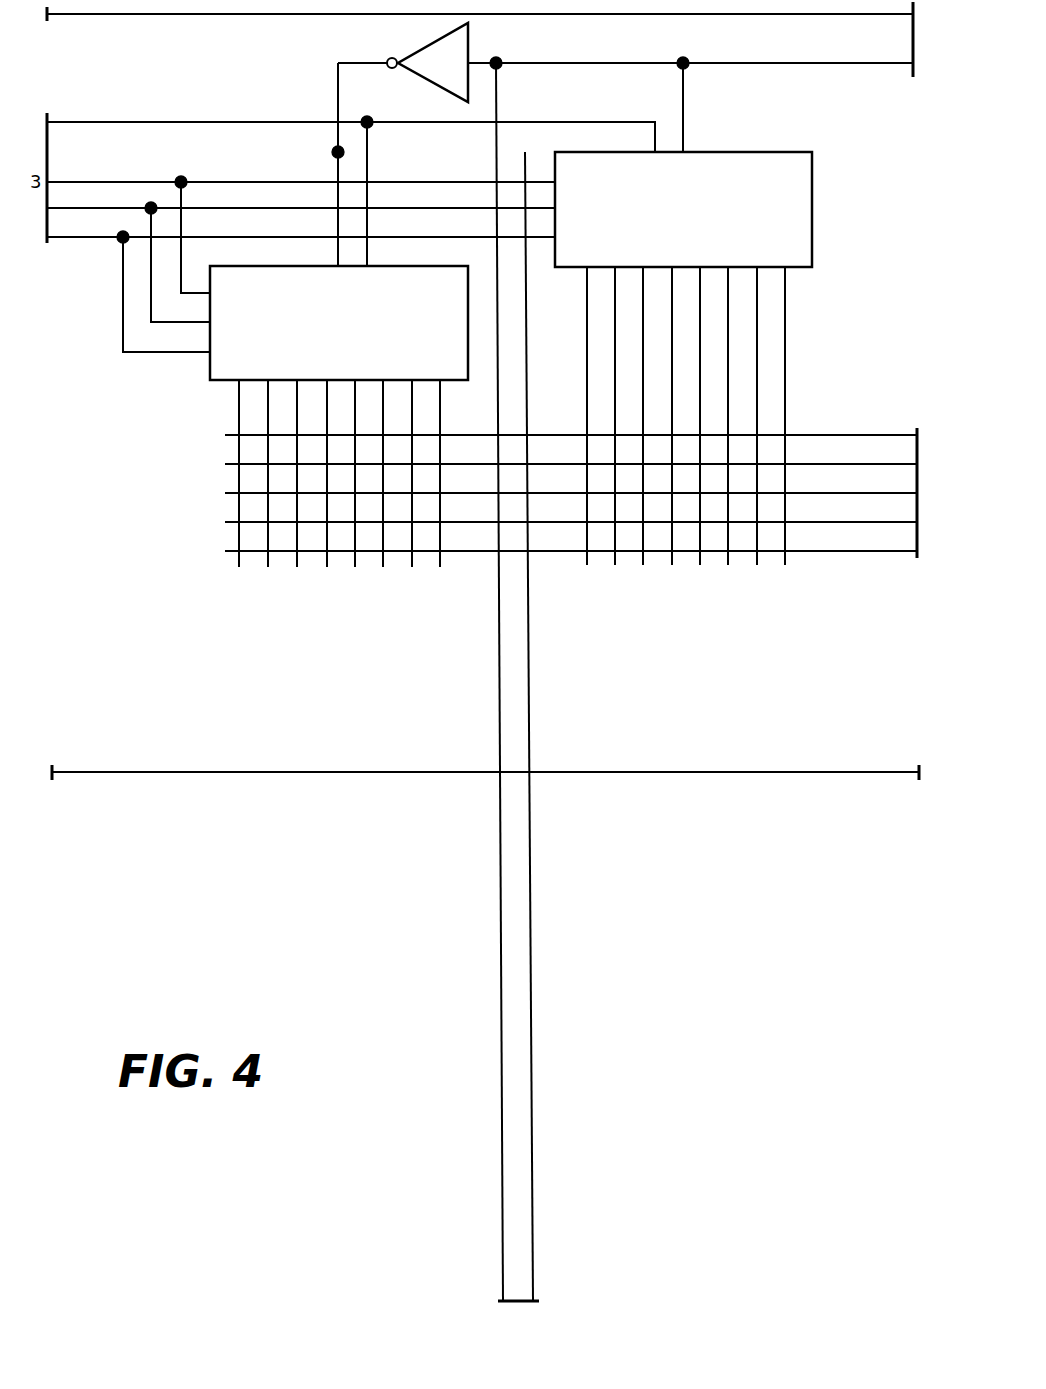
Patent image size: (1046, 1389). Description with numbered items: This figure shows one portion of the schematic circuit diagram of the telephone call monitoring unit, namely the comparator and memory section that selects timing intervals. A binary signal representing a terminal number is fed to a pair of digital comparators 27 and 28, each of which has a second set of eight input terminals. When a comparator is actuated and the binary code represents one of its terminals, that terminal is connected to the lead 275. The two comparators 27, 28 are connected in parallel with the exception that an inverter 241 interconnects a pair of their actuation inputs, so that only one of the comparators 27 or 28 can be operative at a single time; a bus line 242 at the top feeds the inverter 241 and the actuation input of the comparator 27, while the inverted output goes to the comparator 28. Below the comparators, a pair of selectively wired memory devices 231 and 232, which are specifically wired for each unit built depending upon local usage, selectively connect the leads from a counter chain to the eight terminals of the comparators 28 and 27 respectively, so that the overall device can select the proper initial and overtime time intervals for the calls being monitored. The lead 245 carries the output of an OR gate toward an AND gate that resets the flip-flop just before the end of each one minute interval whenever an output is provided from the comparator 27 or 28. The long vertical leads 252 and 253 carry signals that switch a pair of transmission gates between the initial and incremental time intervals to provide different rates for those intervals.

The top bus line 242 is at (240, 16).
The inverter 241 is at (424, 52).
The lead 275 is at (596, 120).
The digital comparator 27 is at (782, 152).
The digital comparator 28 is at (210, 250).
The selectively wired memory device 231 is at (337, 566).
The selectively wired memory device 232 is at (707, 565).
The lead 245 is at (262, 773).
The lead 252 is at (502, 1015).
The lead 253 is at (533, 1079).